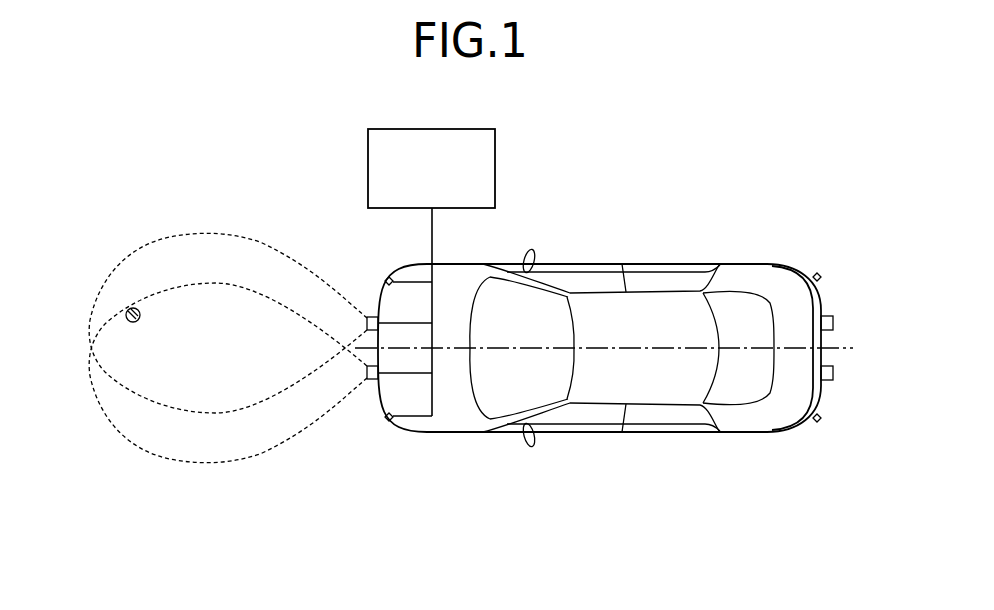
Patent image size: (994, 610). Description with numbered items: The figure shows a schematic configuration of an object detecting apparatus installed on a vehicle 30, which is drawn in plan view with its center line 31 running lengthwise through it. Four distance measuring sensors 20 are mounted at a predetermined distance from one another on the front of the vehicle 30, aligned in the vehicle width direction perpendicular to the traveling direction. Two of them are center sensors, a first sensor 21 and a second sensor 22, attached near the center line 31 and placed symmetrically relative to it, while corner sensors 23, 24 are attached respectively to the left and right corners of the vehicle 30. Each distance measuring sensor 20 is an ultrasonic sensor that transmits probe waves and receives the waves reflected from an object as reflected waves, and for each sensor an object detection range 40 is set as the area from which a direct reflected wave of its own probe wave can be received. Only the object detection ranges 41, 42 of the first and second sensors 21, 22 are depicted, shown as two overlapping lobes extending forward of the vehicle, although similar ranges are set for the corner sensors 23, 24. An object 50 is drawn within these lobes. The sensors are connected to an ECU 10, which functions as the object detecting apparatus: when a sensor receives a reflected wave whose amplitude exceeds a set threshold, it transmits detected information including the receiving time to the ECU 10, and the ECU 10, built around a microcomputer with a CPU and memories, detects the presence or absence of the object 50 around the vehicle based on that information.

The ECU 10 is at (457, 129).
The distance measuring sensor 20 is at (577, 317).
The first sensor 21 is at (367, 317).
The second sensor 22 is at (367, 380).
The corner sensor 23 is at (389, 277).
The corner sensor 24 is at (389, 421).
The vehicle 30 is at (648, 262).
The center line 31 is at (621, 349).
The object detection range 40 is at (228, 350).
The object detection range 41 is at (128, 248).
The object detection range 42 is at (132, 448).
The object 50 is at (128, 310).